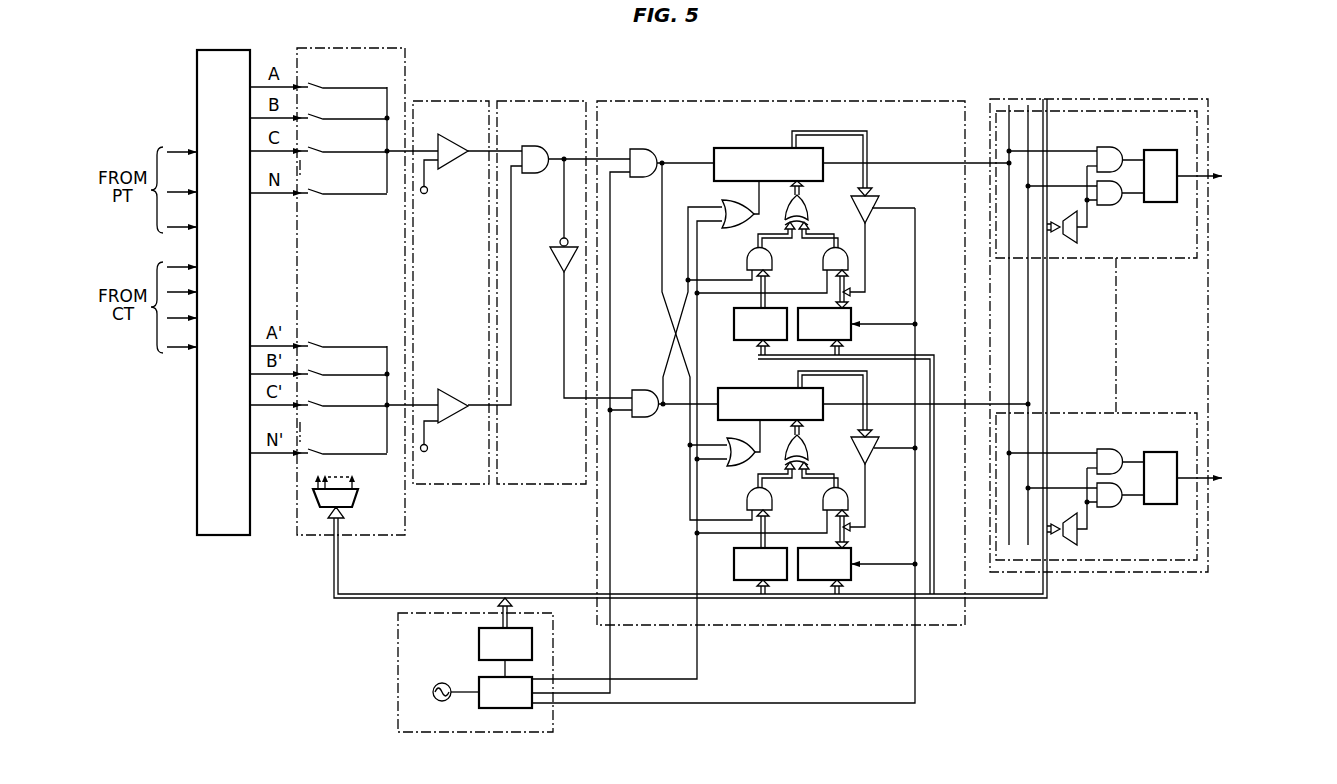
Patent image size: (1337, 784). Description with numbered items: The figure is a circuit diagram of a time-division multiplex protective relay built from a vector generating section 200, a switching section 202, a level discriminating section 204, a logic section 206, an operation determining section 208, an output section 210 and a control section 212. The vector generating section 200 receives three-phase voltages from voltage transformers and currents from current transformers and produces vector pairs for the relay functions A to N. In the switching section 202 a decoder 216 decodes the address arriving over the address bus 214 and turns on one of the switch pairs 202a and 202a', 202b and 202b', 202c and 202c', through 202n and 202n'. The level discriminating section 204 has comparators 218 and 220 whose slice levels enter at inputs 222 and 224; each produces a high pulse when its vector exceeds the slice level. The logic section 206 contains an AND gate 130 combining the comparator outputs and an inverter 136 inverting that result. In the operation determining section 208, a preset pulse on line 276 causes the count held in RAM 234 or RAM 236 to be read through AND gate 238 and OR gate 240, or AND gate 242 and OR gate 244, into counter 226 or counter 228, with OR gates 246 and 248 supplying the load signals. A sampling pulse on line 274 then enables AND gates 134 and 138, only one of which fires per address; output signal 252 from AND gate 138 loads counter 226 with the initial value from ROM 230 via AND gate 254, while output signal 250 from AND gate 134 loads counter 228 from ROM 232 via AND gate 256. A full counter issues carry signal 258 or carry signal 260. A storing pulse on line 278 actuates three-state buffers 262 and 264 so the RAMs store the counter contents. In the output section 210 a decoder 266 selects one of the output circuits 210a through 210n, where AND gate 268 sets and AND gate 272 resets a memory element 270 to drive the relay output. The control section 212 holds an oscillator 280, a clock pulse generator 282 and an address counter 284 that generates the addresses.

The vector generating section 200 is at (205, 50).
The switching section 202 is at (323, 48).
The switch 202a is at (318, 72).
The switch 202b is at (318, 104).
The switch 202c is at (318, 137).
The switch 202n is at (318, 179).
The switch 202a' is at (318, 331).
The switch 202b' is at (318, 360).
The switch 202c' is at (318, 391).
The switch 202n' is at (318, 439).
The level discriminating section 204 is at (462, 101).
The logic section 206 is at (515, 101).
The operation determining section 208 is at (757, 101).
The output section 210 is at (1118, 572).
The output circuit 210a is at (1068, 111).
The output circuit 210n is at (1140, 413).
The control section 212 is at (398, 658).
The address bus 214 is at (383, 594).
The decoder 216 is at (357, 498).
The comparator 218 is at (455, 167).
The comparator 220 is at (453, 389).
The input 222 is at (427, 193).
The input 224 is at (427, 451).
The counter 226 is at (760, 148).
The counter 228 is at (735, 388).
The read-only memory 230 is at (734, 340).
The read-only memory 232 is at (734, 571).
The random access memory 234 is at (851, 324).
The random access memory 236 is at (851, 562).
The AND gate 238 is at (823, 269).
The OR gate 240 is at (802, 203).
The AND gate 242 is at (823, 500).
The OR gate 244 is at (803, 437).
The OR gate 246 is at (722, 203).
The OR gate 248 is at (728, 463).
The output signal 250 is at (662, 262).
The output signal 252 is at (667, 346).
The AND gate 254 is at (747, 262).
The AND gate 256 is at (747, 500).
The carry signal 258 is at (908, 163).
The carry signal 260 is at (985, 402).
The three-state buffer 262 is at (872, 205).
The three-state buffer 264 is at (869, 458).
The decoder 266 is at (1077, 240).
The AND gate 268 is at (1104, 147).
The memory element 270 is at (1160, 150).
The AND gate 272 is at (1118, 205).
The line 274 is at (611, 663).
The line 276 is at (700, 665).
The line 278 is at (917, 673).
The oscillator 280 is at (445, 684).
The clock pulse generator 282 is at (479, 702).
The address counter 284 is at (479, 636).
The AND gate 130 is at (536, 173).
The AND gate 134 is at (644, 149).
The inverter 136 is at (554, 260).
The AND gate 138 is at (640, 390).